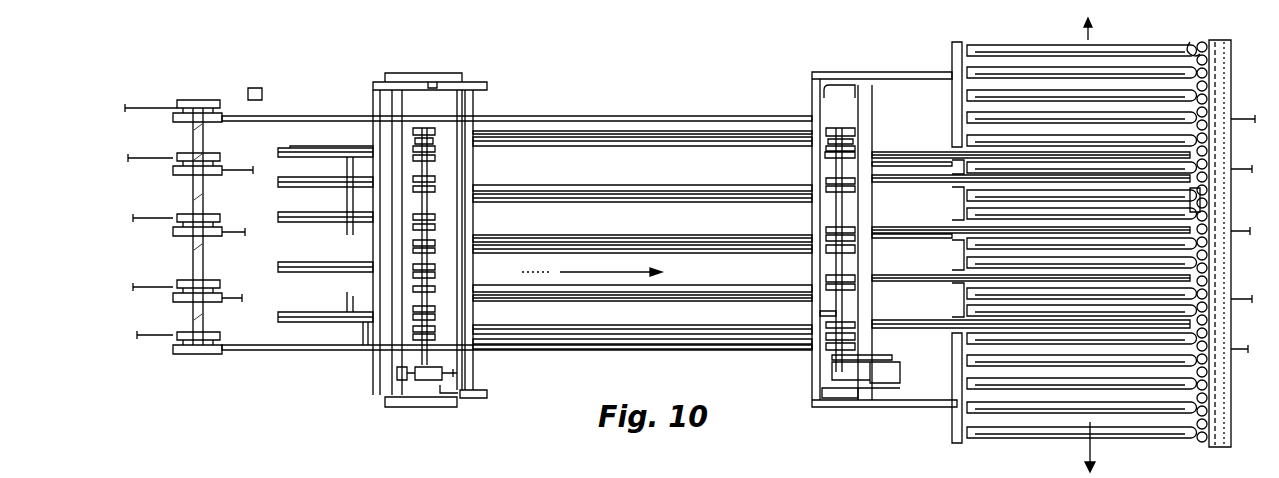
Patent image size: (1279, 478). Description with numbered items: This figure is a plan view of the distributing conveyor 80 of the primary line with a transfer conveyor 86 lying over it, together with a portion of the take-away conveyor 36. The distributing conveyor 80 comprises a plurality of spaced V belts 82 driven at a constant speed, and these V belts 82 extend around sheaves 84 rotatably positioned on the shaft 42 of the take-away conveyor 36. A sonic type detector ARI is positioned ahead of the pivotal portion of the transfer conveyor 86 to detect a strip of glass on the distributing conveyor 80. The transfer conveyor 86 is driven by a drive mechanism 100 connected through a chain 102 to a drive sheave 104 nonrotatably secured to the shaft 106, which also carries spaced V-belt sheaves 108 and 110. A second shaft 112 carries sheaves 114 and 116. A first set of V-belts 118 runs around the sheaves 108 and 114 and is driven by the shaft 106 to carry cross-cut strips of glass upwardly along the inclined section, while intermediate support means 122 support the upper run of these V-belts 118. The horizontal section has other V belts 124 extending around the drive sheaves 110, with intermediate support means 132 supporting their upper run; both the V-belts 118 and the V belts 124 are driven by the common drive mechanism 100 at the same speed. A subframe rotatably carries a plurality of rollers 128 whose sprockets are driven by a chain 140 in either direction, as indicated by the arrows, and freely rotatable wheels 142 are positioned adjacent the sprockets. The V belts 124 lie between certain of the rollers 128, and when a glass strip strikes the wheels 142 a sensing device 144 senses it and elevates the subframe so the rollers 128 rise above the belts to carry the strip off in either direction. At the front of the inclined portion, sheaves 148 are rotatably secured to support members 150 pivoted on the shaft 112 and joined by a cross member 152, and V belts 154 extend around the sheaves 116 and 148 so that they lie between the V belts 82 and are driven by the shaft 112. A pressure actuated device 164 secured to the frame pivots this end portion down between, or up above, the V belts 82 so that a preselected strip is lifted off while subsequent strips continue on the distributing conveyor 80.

The take-away conveyor 36 is at (138, 108).
The sonic type detector ARI is at (255, 88).
The shaft 42 is at (192, 195).
The sheaves 84 is at (187, 157).
The V belts 82 is at (238, 168).
The distributing conveyor 80 is at (693, 115).
The transfer conveyor 86 is at (730, 172).
The intermediate support means 122 is at (642, 202).
The first set of V-belts 118 is at (734, 234).
The sheaves 148 is at (288, 152).
The support members 150 is at (313, 161).
The sheaves 116 is at (430, 273).
The cross member 152 is at (347, 306).
The V belts 154 is at (363, 323).
The shaft 112 is at (437, 272).
The sheaves 114 is at (415, 236).
The pressure actuated device 164 is at (422, 381).
The V-belt sheaves 110 is at (820, 170).
The V-belt sheaves 108 is at (854, 140).
The shaft 106 is at (820, 313).
The drive sheave 104 is at (832, 357).
The chain 102 is at (868, 362).
The drive mechanism 100 is at (887, 375).
The V belts 124 is at (940, 150).
The intermediate support means 132 is at (914, 208).
The rollers 128 is at (1032, 48).
The wheels 142 is at (1188, 41).
The chain 140 is at (1217, 444).
The sensing device 144 is at (1195, 195).